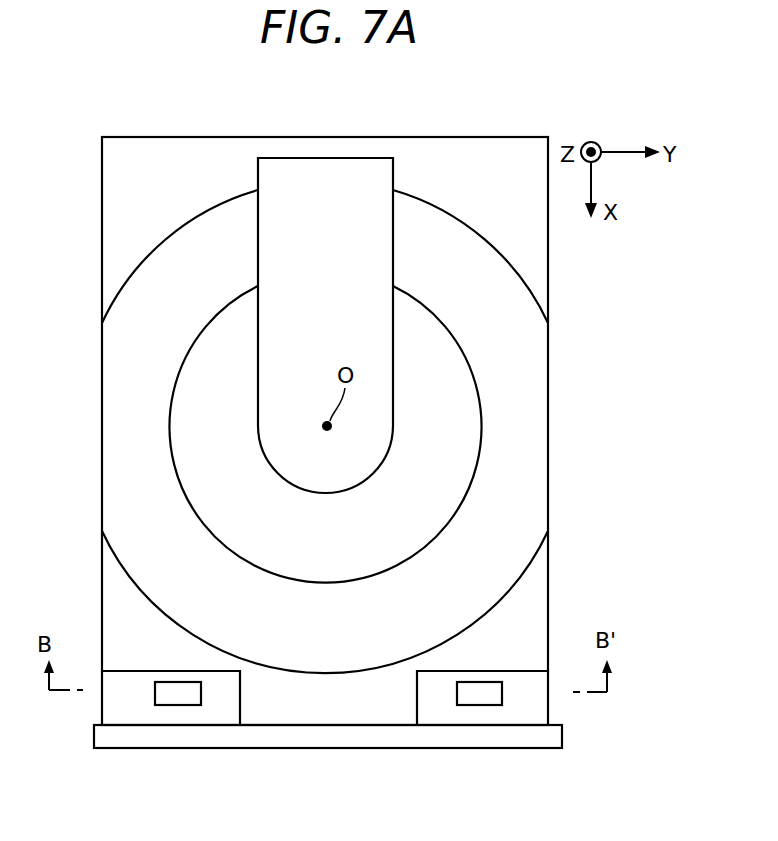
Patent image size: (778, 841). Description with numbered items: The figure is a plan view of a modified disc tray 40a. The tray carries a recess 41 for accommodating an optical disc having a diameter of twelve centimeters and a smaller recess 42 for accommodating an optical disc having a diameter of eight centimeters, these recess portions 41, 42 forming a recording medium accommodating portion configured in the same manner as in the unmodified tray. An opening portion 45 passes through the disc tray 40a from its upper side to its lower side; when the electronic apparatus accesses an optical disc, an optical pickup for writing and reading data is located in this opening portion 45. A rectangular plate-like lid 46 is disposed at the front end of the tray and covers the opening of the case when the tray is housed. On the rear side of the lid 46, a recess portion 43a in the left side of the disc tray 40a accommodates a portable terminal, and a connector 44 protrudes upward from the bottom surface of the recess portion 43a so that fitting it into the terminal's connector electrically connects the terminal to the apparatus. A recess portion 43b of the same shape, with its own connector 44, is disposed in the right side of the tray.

The disc tray 40a is at (150, 178).
The recess 41 is at (513, 322).
The recess 42 is at (445, 473).
The opening portion 45 is at (290, 272).
The recess portion 43a is at (228, 712).
The recess portion 43b is at (430, 712).
The connector 44 is at (175, 697).
The lid 46 is at (538, 740).